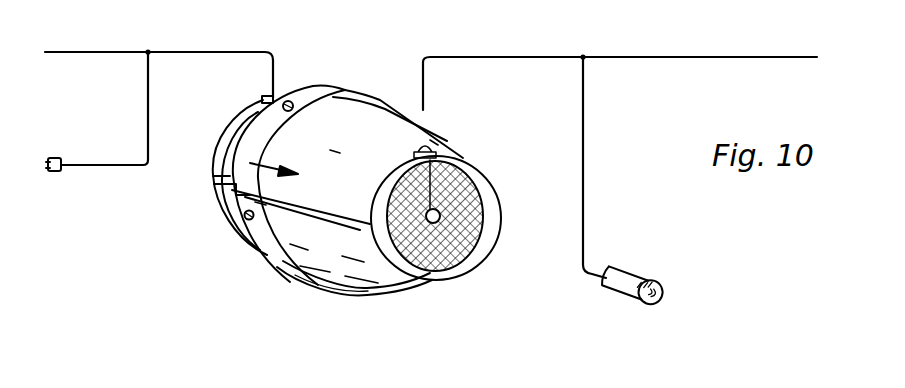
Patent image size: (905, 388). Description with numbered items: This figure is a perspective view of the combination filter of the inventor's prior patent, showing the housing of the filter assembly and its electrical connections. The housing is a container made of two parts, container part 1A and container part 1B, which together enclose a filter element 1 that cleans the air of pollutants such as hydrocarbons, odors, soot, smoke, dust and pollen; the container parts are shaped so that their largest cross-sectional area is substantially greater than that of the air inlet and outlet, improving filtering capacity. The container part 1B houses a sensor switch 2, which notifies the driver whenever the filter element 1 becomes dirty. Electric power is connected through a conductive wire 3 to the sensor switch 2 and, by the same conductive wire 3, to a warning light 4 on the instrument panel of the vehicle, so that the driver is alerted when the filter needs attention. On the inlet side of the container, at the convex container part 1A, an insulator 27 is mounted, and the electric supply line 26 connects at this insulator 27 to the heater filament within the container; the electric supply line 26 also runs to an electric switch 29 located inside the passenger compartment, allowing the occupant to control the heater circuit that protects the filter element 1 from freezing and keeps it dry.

The filter element 1 is at (376, 158).
The container part 1A is at (315, 85).
The container part 1B is at (383, 100).
The sensor switch 2 is at (441, 210).
The conductive wire 3 is at (663, 57).
The warning light 4 is at (627, 268).
The electric supply line 26 is at (100, 52).
The insulator 27 is at (264, 97).
The electric switch 29 is at (52, 158).